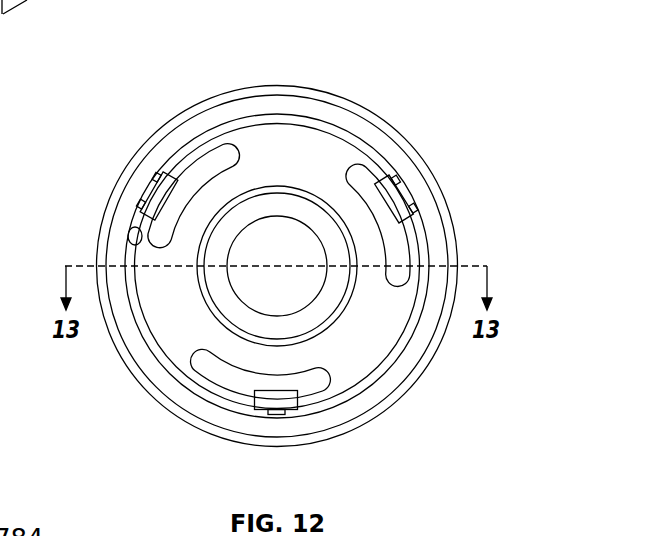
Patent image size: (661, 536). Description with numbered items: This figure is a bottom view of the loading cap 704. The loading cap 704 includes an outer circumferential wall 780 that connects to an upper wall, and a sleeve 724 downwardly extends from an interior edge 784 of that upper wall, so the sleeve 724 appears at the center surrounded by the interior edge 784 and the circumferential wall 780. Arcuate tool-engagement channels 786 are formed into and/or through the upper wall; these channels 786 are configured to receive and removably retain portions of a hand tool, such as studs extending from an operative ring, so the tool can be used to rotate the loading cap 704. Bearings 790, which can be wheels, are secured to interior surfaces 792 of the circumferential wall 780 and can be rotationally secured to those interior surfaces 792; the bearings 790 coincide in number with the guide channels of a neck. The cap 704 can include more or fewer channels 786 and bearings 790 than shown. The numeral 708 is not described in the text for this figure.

The loading cap 704 is at (439, 144).
The central axis 708 is at (278, 233).
The sleeve 724 is at (248, 222).
The outer circumferential wall 780 is at (443, 198).
The interior edge 784 is at (305, 224).
The arcuate tool-engagement channels 786 is at (222, 160).
The bearings 790 is at (172, 200).
The interior surfaces 792 is at (130, 240).